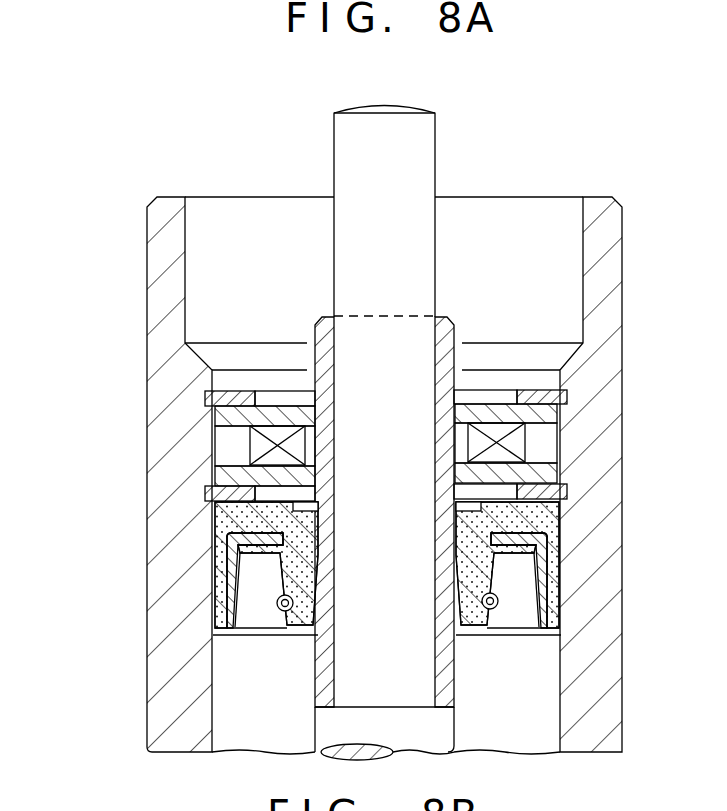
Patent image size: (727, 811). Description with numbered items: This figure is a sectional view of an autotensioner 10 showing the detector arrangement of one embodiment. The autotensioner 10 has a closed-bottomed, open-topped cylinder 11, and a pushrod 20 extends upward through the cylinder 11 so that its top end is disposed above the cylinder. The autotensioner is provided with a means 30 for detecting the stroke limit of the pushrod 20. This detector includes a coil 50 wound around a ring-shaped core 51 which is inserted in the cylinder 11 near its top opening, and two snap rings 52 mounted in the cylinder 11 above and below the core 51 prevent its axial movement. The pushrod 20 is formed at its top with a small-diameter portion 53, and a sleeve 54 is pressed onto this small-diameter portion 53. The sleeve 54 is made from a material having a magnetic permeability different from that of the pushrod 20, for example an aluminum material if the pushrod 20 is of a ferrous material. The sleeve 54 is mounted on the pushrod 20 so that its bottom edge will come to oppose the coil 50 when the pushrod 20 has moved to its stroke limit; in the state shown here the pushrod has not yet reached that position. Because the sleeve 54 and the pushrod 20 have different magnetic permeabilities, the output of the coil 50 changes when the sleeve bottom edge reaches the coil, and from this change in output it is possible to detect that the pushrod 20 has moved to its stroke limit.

The autotensioner 10 is at (131, 206).
The cylinder 11 is at (158, 263).
The pushrod 20 is at (438, 742).
The means for detecting the stroke limit 30 is at (277, 392).
The coil 50 is at (255, 443).
The ring-shaped core 51 is at (222, 414).
The snap ring 52 is at (232, 393).
The small-diameter portion 53 is at (341, 143).
The sleeve 54 is at (458, 331).